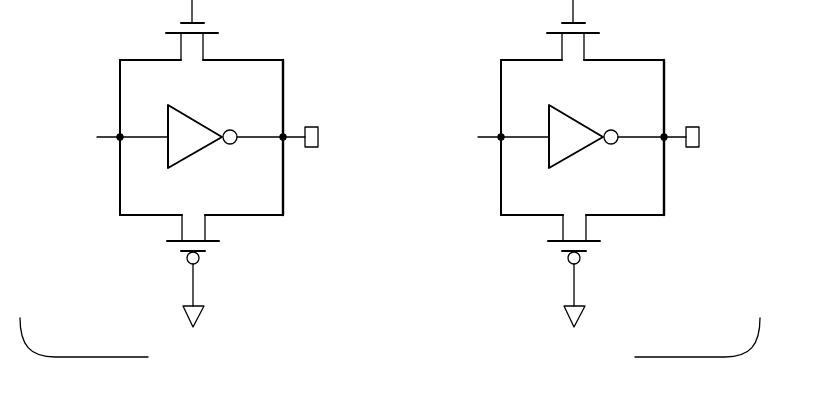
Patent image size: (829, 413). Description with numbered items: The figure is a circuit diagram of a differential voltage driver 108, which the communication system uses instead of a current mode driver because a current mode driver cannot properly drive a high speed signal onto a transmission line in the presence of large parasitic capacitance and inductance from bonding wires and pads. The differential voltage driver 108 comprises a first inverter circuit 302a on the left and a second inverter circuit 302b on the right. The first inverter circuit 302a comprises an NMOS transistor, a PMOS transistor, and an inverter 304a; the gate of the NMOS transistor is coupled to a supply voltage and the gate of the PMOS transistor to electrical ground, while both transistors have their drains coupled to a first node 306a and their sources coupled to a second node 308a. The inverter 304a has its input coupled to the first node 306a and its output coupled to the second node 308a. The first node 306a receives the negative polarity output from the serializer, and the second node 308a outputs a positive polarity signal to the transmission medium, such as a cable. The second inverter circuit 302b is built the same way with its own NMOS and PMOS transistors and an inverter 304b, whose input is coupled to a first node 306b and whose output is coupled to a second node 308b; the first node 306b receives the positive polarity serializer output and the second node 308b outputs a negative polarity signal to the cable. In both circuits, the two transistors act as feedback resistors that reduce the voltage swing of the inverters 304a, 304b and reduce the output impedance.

The differential voltage driver 108 is at (618, 378).
The first inverter circuit 302a is at (194, 163).
The second inverter circuit 302b is at (577, 163).
The inverter 304a is at (193, 157).
The inverter 304b is at (601, 149).
The first node 306a is at (120, 80).
The first node 306b is at (462, 129).
The second node 308a is at (284, 75).
The second node 308b is at (705, 130).